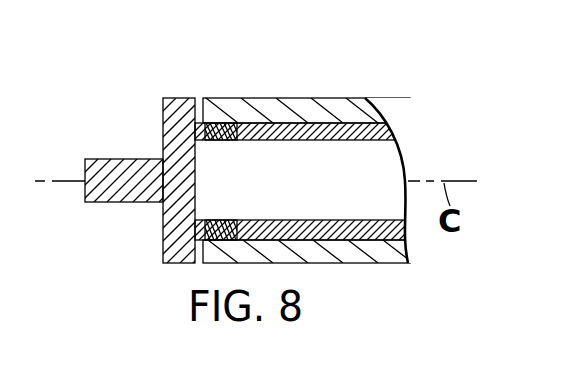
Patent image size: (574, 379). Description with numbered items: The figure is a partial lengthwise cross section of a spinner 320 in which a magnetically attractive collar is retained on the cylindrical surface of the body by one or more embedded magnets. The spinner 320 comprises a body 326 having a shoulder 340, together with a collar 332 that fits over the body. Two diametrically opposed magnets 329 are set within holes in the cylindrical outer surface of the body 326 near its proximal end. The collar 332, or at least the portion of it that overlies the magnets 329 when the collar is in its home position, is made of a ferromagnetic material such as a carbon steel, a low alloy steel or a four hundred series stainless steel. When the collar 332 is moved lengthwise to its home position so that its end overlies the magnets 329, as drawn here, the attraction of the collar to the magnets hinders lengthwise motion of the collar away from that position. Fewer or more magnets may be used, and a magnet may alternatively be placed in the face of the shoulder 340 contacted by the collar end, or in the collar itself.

The spinner 320 is at (213, 146).
The body 326 is at (161, 133).
The magnets 329 is at (222, 142).
The collar 332 is at (364, 98).
The shoulder 340 is at (183, 97).